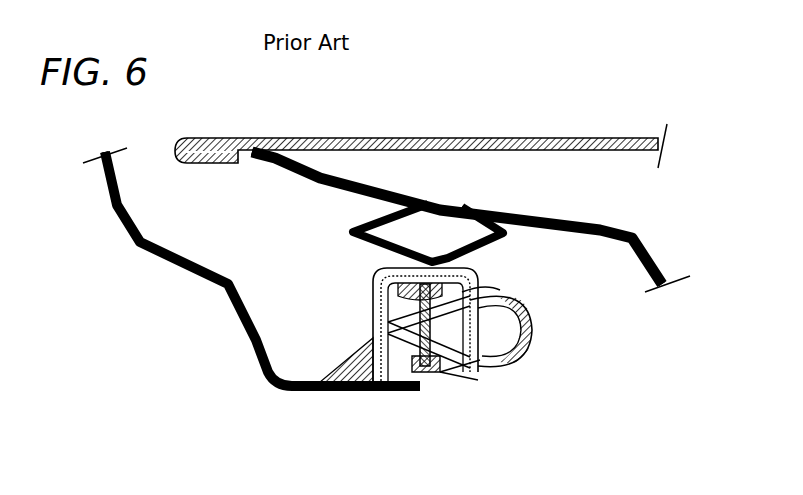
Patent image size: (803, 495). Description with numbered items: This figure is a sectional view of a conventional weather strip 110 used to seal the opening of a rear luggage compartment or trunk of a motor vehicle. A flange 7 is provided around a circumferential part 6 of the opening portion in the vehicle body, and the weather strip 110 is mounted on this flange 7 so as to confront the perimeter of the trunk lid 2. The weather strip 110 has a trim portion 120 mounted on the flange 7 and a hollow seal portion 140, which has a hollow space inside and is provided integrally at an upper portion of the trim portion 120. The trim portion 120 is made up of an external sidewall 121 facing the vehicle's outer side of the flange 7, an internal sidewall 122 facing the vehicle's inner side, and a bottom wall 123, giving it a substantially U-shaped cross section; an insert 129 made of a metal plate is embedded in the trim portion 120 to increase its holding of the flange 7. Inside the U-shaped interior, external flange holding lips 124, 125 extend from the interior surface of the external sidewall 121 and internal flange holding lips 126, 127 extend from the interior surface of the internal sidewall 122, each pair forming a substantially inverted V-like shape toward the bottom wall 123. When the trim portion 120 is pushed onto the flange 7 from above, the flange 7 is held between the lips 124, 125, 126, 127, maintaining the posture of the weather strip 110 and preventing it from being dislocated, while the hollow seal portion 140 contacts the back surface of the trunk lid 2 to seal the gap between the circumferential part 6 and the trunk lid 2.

The trunk lid 2 is at (454, 208).
The circumferential part of the opening portion 6 is at (251, 267).
The flange 7 is at (457, 381).
The weather strip 110 is at (370, 230).
The trim portion 120 is at (446, 367).
The external sidewall 121 is at (375, 326).
The internal sidewall 122 is at (544, 331).
The bottom wall 123 is at (388, 233).
The external flange holding lip 124 is at (404, 375).
The external flange holding lip 125 is at (371, 332).
The internal flange holding lip 126 is at (448, 411).
The internal flange holding lip 127 is at (540, 303).
The insert 129 is at (529, 374).
The hollow seal portion 140 is at (529, 248).